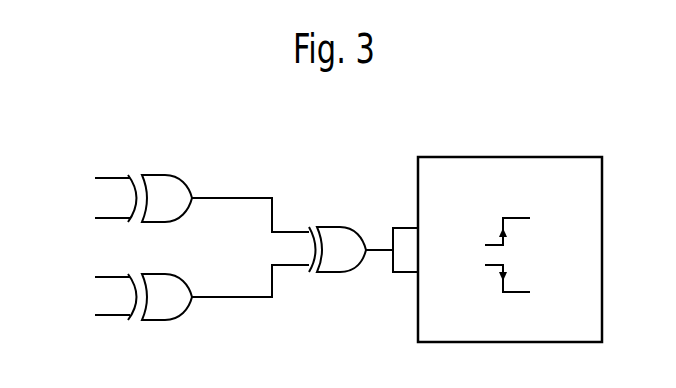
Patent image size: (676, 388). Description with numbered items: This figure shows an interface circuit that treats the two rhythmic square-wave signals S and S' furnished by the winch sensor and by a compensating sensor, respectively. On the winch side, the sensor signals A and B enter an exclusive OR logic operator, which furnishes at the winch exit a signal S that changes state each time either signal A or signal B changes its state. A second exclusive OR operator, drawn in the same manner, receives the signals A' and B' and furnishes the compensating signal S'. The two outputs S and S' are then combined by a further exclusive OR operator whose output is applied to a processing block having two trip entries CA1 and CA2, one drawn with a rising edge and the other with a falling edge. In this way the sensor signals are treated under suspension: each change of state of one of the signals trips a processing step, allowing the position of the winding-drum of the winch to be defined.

The signal A is at (96, 170).
The signal B is at (96, 208).
The second input signal A' is at (96, 267).
The second input signal B' is at (96, 305).
The signal S is at (250, 197).
The signal S' is at (250, 300).
The trip entry CA1 is at (486, 237).
The trip entry CA2 is at (484, 275).